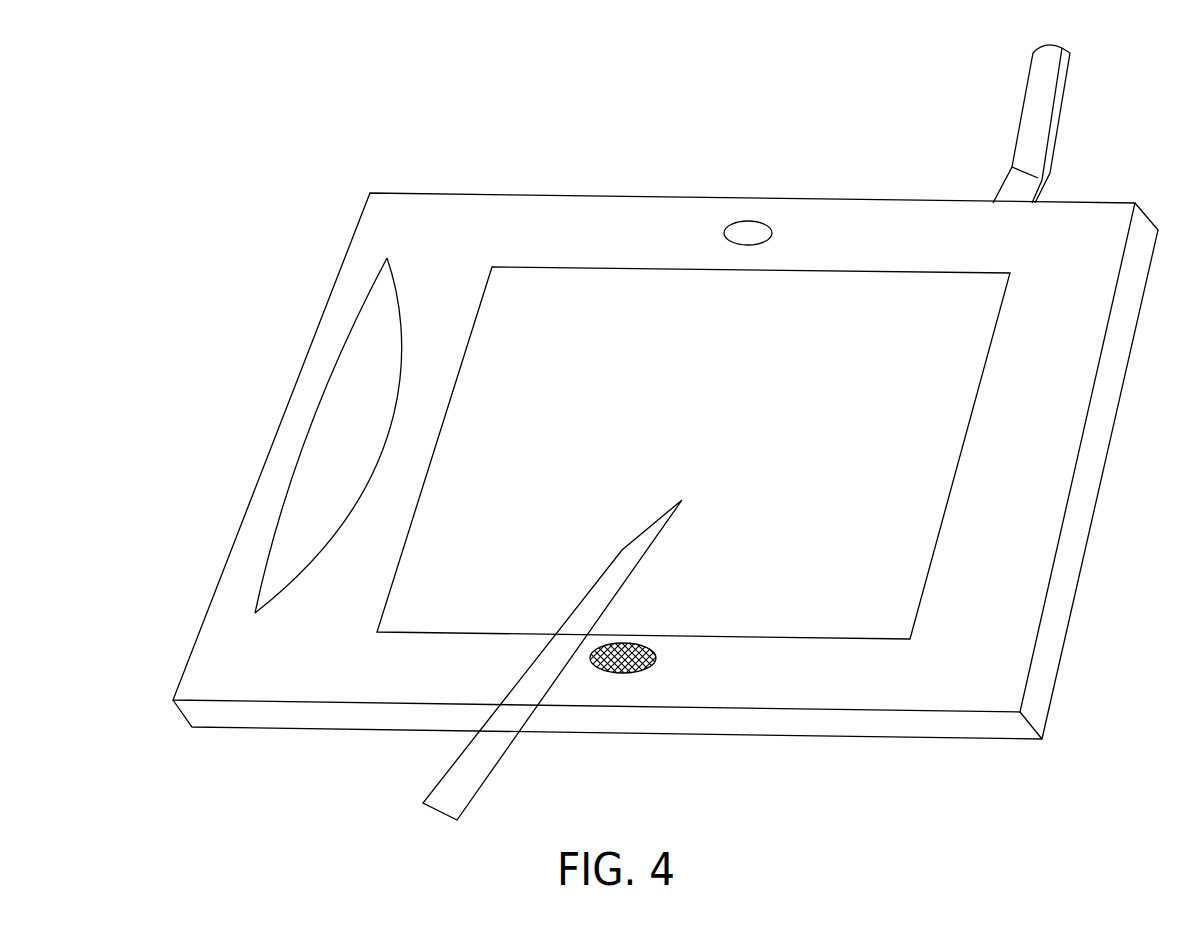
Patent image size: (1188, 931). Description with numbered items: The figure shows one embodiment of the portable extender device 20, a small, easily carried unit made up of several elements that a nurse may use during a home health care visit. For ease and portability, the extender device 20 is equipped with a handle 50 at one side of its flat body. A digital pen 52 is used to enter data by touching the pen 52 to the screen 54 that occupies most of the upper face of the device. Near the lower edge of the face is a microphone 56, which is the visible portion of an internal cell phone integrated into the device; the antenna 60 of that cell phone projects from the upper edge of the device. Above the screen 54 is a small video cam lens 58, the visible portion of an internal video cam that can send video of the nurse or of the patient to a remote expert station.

The portable extender device 20 is at (978, 772).
The handle 50 is at (267, 420).
The digital pen 52 is at (437, 778).
The screen 54 is at (590, 333).
The microphone 56 is at (650, 667).
The small video cam lens 58 is at (750, 228).
The antenna 60 is at (1062, 108).